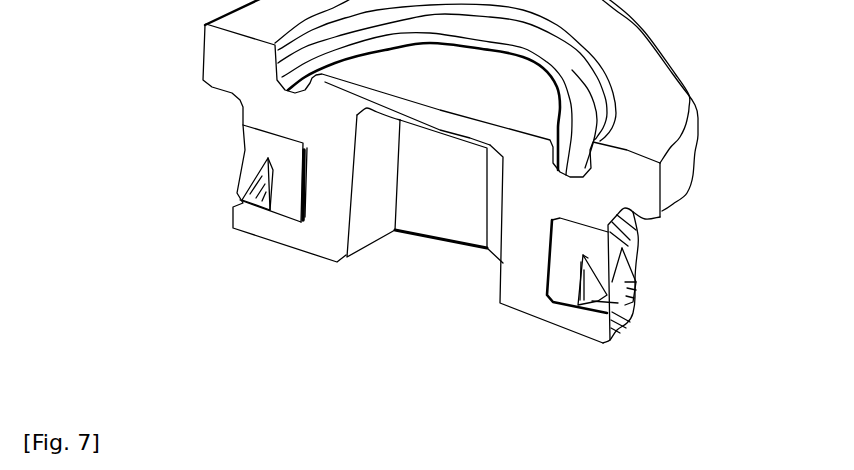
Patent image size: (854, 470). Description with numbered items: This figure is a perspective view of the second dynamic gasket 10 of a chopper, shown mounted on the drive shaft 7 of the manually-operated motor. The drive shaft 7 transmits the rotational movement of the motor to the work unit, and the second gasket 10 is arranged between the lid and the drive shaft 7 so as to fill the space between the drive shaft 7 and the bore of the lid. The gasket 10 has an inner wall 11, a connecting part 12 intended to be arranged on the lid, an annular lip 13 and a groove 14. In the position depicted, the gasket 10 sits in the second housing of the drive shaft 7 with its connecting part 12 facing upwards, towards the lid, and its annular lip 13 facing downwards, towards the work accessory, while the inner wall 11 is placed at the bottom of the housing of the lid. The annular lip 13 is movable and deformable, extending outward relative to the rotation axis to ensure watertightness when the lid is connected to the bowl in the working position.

The drive shaft 7 is at (473, 171).
The second dynamic gasket 10 is at (240, 163).
The inner wall 11 is at (649, 276).
The connecting part 12 is at (662, 275).
The annular lip 13 is at (656, 286).
The groove 14 is at (620, 295).